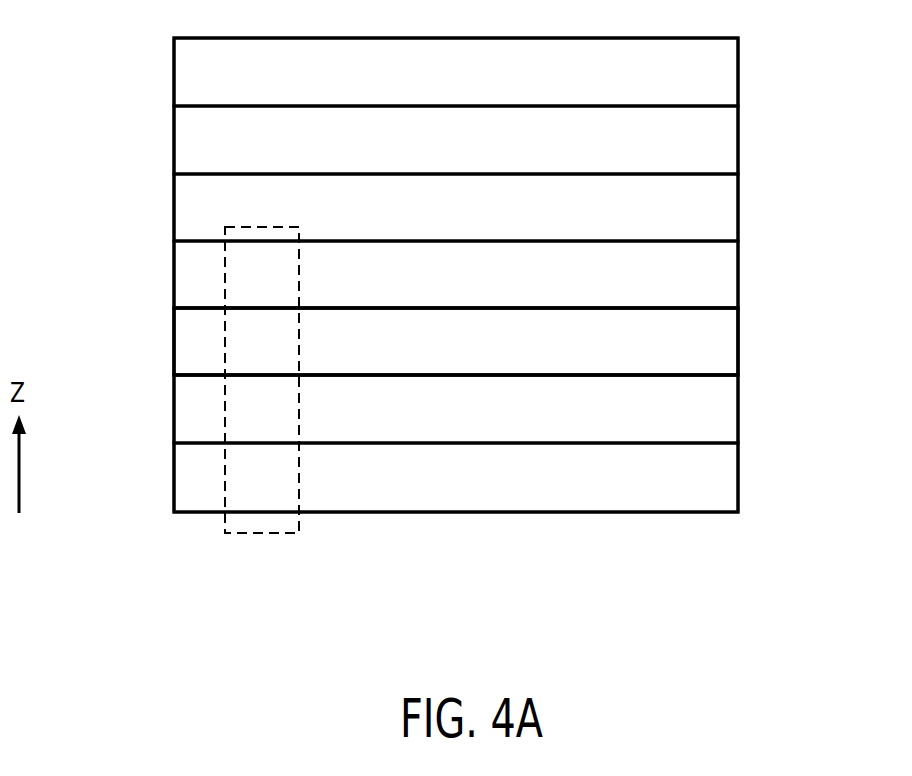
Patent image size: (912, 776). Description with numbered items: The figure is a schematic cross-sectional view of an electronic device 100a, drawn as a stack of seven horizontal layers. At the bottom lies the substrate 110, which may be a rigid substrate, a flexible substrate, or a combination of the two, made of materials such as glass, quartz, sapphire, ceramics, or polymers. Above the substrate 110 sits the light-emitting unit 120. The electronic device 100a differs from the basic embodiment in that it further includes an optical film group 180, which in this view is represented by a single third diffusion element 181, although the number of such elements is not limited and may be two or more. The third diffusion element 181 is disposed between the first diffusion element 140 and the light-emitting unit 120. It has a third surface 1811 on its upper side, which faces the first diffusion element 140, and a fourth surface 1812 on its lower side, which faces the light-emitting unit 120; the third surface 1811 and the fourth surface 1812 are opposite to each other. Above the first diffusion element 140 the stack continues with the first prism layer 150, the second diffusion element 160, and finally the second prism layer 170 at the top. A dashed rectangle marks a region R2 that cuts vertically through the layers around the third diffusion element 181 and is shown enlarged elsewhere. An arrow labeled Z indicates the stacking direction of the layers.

The electronic device 100a is at (843, 609).
The second prism layer 170 is at (727, 74).
The second diffusion element 160 is at (727, 139).
The first prism layer 150 is at (727, 207).
The first diffusion element 140 is at (727, 275).
The third diffusion element 181 is at (727, 343).
The optical film group 180 is at (456, 341).
The light-emitting unit 120 is at (727, 410).
The substrate 110 is at (727, 478).
The third surface 1811 is at (205, 303).
The fourth surface 1812 is at (205, 381).
The region R2 is at (254, 534).